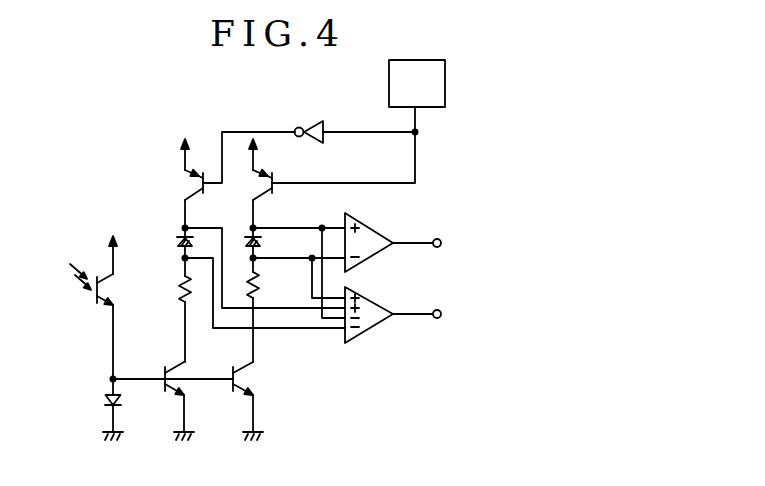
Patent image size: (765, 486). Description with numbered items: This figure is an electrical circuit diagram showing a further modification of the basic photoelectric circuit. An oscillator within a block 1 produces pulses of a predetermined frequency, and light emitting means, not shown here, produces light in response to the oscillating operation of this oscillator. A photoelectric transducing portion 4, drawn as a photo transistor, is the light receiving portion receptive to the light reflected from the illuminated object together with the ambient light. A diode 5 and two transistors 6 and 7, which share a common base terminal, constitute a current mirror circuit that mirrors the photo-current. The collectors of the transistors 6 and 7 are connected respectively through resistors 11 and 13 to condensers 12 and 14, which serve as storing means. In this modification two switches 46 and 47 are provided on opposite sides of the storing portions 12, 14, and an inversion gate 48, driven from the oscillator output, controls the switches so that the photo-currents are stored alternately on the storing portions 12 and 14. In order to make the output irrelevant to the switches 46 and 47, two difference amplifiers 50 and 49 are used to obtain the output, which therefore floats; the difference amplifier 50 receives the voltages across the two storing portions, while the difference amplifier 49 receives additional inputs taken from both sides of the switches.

The block 1 is at (445, 87).
The photoelectric transducing portion 4 is at (103, 306).
The diode 5 is at (104, 401).
The transistor 6 is at (186, 373).
The transistor 7 is at (256, 380).
The resistor 11 is at (180, 290).
The condenser 12 is at (178, 241).
The resistor 13 is at (259, 283).
The condenser 14 is at (246, 241).
The switch 46 is at (199, 185).
The switch 47 is at (276, 179).
The inversion gate 48 is at (313, 121).
The difference amplifier 49 is at (368, 332).
The difference amplifier 50 is at (386, 230).